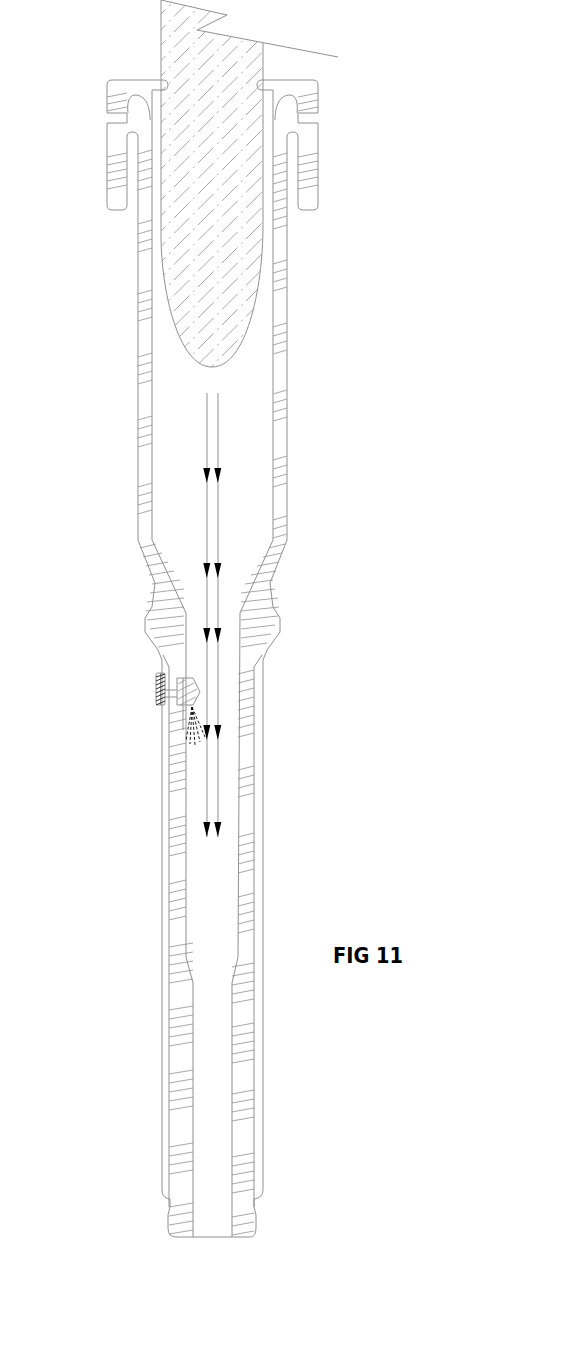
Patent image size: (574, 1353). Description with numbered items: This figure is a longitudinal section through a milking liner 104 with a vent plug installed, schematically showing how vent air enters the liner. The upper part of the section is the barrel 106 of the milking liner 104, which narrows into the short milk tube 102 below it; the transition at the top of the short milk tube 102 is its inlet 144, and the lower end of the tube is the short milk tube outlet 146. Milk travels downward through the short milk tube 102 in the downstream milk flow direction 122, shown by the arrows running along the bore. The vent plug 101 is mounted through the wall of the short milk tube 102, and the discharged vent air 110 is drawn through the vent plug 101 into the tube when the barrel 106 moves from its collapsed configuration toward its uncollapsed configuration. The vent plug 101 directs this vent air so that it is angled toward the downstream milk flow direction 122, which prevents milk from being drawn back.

The nozzle 101 is at (156, 692).
The short milk tube 102 is at (248, 730).
The milking liner 104 is at (317, 518).
The barrel 106 is at (287, 463).
The discharged vent air 110 is at (187, 723).
The milk flow direction 122 is at (215, 784).
The inlet of short milk tube 144 is at (227, 620).
The short milk tube outlet 146 is at (213, 1230).